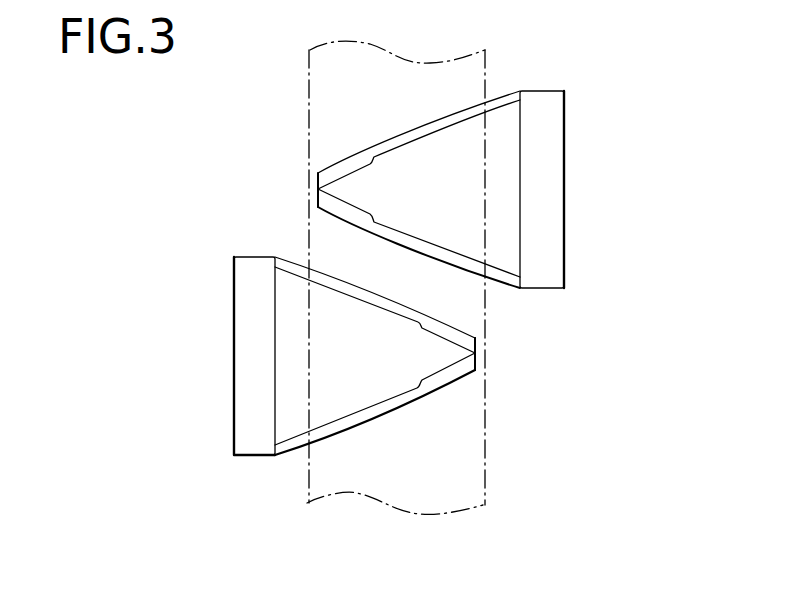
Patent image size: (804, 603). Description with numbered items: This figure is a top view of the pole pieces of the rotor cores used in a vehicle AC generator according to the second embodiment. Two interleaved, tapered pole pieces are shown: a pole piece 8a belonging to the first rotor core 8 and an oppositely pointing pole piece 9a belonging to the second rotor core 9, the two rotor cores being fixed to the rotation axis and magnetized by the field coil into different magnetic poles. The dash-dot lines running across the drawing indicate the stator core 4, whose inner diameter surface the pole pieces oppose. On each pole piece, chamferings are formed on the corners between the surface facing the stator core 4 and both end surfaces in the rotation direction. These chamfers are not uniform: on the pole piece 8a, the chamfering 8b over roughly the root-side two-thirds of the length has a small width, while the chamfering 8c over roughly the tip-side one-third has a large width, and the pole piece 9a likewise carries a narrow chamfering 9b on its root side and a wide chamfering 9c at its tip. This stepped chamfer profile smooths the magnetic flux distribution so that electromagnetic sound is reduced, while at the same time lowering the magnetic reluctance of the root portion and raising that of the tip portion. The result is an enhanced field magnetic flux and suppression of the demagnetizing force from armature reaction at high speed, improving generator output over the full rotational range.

The stator core 4 is at (424, 516).
The first rotor core 8 is at (469, 160).
The pole piece 8a is at (452, 142).
The chamfering 8b is at (400, 135).
The chamfering 8c is at (340, 170).
The second rotor core 9 is at (357, 395).
The pole piece 9a is at (240, 310).
The chamfering 9b is at (326, 432).
The chamfering 9c is at (457, 372).